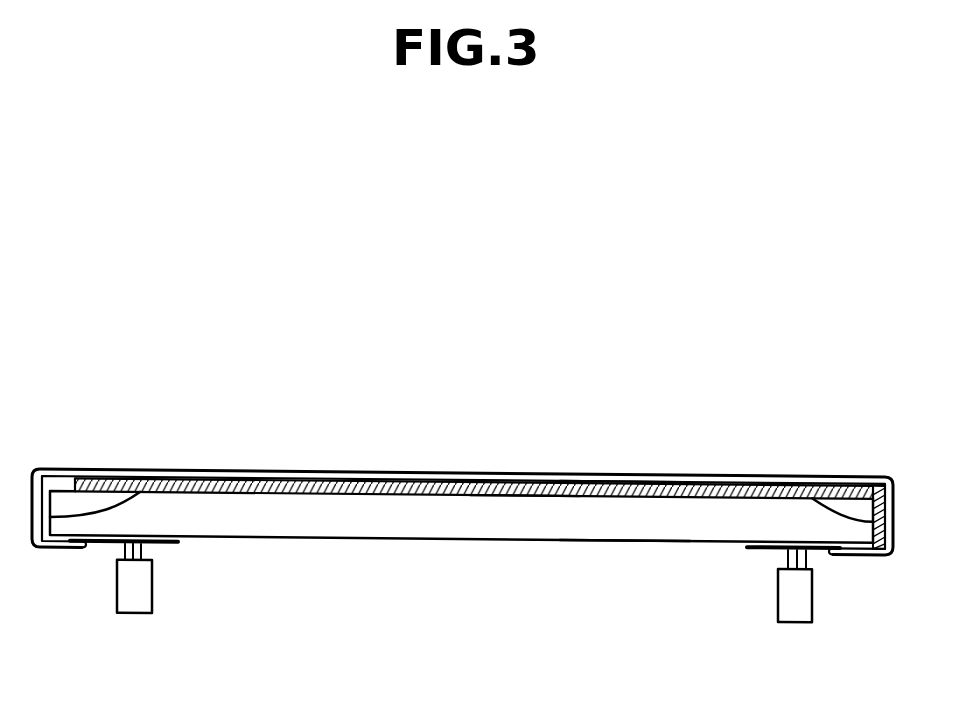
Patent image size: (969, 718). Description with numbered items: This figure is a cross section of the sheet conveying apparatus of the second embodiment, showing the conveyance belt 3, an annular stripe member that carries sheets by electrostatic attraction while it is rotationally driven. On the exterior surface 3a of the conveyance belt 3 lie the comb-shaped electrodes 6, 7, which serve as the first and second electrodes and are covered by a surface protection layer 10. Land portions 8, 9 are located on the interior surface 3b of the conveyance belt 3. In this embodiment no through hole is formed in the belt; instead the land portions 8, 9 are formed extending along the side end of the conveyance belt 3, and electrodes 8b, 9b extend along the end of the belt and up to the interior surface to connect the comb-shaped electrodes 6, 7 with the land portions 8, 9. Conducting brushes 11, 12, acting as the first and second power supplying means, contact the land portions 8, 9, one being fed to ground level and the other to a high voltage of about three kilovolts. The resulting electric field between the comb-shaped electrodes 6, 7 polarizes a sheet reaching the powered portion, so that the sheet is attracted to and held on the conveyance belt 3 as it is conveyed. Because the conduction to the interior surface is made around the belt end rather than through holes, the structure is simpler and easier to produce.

The conveyance belt 3 is at (477, 528).
The exterior surface 3a is at (612, 476).
The interior surface 3b is at (625, 543).
The comb-shaped electrode 6 is at (522, 495).
The comb-shaped electrode 7 is at (70, 470).
The land portion 8 is at (758, 552).
The electrode 8b is at (815, 495).
The land portion 9 is at (168, 545).
The electrode 9b is at (130, 492).
The surface protection layer 10 is at (355, 470).
The conducting brush 11 is at (800, 613).
The conducting brush 12 is at (135, 603).